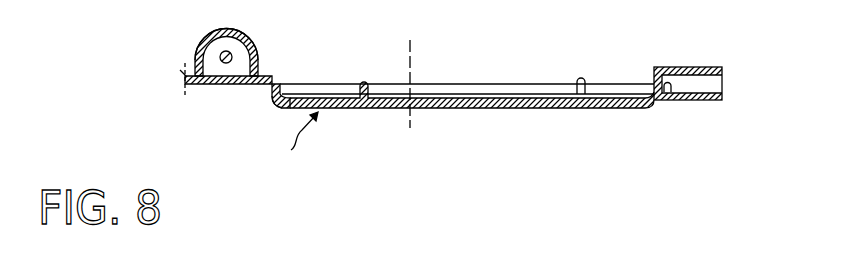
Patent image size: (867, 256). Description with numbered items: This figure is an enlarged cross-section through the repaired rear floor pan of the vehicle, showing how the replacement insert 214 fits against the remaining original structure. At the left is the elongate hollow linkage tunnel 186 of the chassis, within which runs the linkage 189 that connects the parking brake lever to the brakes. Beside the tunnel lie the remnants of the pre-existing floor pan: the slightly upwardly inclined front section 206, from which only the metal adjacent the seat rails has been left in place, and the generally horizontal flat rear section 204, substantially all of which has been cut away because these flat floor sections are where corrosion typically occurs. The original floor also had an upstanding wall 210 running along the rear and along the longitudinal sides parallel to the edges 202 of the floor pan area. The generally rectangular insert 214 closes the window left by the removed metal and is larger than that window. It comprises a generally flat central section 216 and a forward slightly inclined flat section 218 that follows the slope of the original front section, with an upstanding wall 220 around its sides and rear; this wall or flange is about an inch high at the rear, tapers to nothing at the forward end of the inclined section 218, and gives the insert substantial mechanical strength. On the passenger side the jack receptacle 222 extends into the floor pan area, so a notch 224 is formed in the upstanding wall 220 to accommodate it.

The linkage tunnel 186 is at (200, 45).
The linkage 189 is at (207, 61).
The longitudinal edges 202 is at (259, 60).
The flat rear section 204 is at (648, 93).
The front section 206 is at (324, 98).
The upstanding wall 210 is at (284, 84).
The insert 214 is at (285, 137).
The flat central section 216 is at (448, 98).
The inclined flat section 218 is at (425, 84).
The upstanding wall 220 is at (272, 96).
The jack receptacle 222 is at (668, 67).
The notch 224 is at (668, 101).